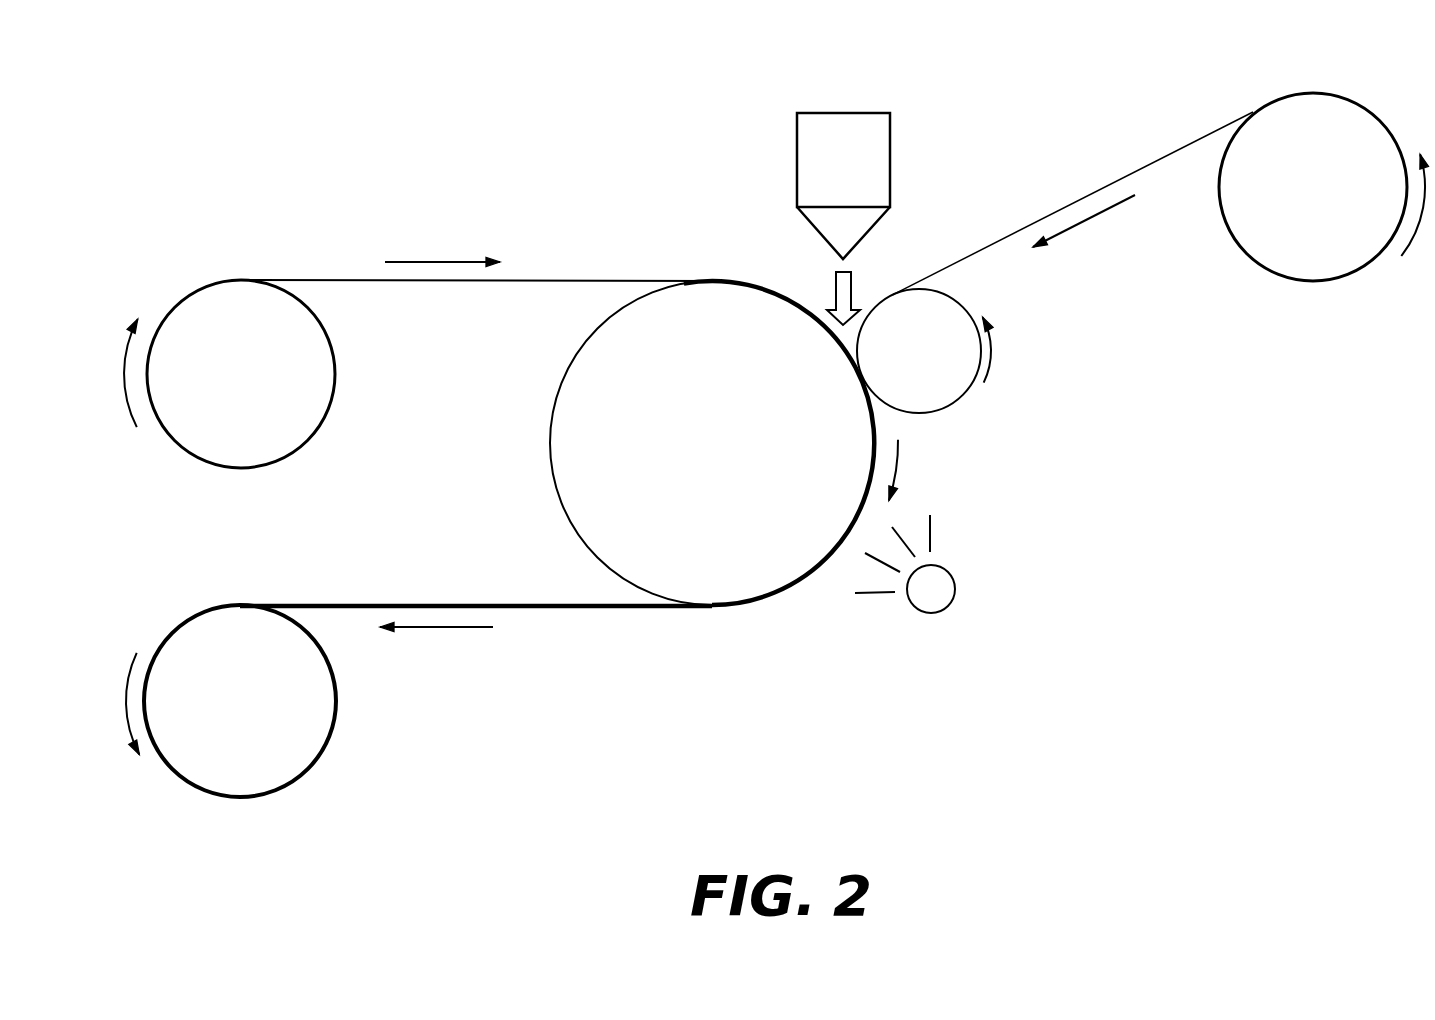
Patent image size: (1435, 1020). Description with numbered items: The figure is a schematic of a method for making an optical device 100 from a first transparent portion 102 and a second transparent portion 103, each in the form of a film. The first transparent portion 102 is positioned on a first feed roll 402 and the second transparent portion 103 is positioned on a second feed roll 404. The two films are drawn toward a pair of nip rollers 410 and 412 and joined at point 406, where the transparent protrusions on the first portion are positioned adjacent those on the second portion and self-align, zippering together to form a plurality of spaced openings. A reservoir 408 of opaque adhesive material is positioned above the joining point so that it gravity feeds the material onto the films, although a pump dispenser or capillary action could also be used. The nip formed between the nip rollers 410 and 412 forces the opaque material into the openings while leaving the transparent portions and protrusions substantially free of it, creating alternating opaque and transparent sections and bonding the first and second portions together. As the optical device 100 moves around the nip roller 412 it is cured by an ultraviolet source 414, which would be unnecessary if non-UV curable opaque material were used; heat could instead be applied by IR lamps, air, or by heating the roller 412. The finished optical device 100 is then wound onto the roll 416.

The optical device 100 is at (578, 607).
The first transparent portion 102 is at (323, 280).
The second transparent portion 103 is at (1168, 157).
The first feed roll 402 is at (240, 453).
The second feed roll 404 is at (1317, 268).
The point 406 is at (835, 297).
The reservoir 408 is at (843, 122).
The nip roller 410 is at (947, 395).
The nip roller 412 is at (565, 441).
The ultraviolet source 414 is at (930, 605).
The roll 416 is at (240, 785).